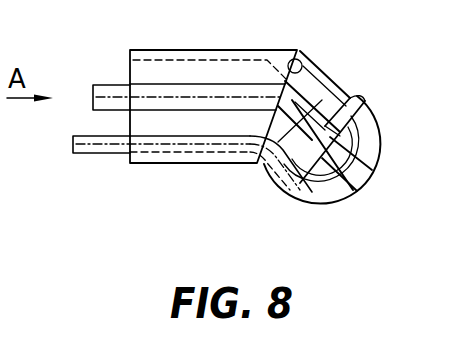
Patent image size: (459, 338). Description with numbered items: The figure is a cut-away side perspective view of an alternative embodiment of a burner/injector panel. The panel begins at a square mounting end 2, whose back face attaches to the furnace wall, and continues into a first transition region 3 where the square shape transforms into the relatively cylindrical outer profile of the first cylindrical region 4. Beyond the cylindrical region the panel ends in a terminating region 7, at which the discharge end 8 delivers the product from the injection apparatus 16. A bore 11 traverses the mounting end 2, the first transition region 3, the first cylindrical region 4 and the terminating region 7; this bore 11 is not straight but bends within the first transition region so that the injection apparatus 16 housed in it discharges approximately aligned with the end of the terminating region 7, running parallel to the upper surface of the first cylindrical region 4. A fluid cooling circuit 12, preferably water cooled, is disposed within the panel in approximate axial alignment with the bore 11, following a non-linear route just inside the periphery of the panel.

The mounting end 2 is at (205, 50).
The first transition region 3 is at (333, 77).
The first cylindrical region 4 is at (357, 100).
The terminating region 7 is at (382, 142).
The discharge end 8 is at (367, 178).
The bore 11 is at (148, 62).
The fluid cooling circuit 12 is at (305, 60).
The injection apparatus 16 is at (108, 88).